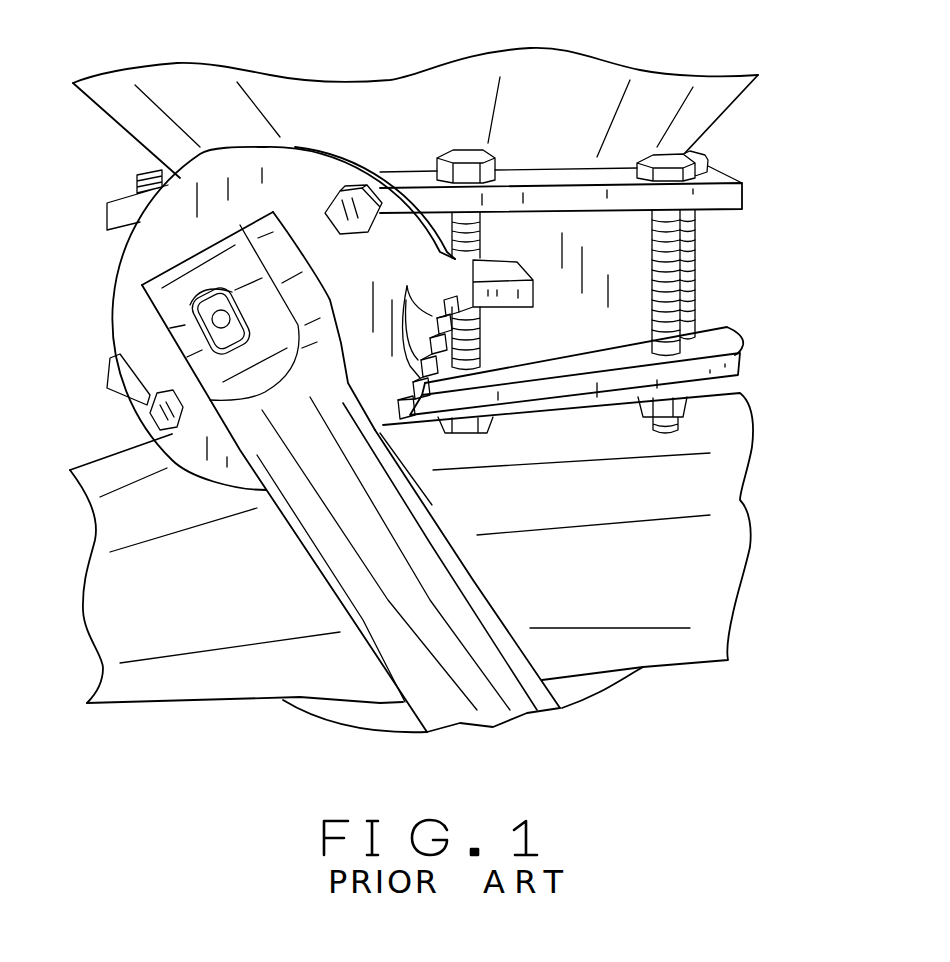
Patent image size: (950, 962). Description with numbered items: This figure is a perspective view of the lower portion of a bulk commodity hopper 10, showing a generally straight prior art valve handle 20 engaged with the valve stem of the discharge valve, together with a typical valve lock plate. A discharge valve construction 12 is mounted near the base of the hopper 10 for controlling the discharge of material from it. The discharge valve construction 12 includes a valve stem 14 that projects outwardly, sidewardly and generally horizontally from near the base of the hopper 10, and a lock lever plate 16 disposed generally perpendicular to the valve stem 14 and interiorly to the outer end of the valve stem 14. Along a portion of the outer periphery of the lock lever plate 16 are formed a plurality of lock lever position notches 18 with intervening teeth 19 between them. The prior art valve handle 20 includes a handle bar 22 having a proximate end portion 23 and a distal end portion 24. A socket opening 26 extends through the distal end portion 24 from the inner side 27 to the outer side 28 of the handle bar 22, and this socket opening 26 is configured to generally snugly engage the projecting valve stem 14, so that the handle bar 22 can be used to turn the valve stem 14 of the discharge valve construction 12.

The bulk commodity hopper 10 is at (547, 95).
The discharge valve construction 12 is at (707, 193).
The valve stem 14 is at (151, 322).
The lock lever plate 16 is at (281, 256).
The lock lever position notches 18 is at (407, 290).
The teeth 19 is at (447, 362).
The valve handle 20 is at (307, 502).
The handle bar 22 is at (301, 530).
The proximate end portion 23 is at (472, 702).
The distal end portion 24 is at (195, 273).
The socket opening 26 is at (208, 347).
The inner side 27 is at (327, 173).
The outer side 28 is at (153, 418).